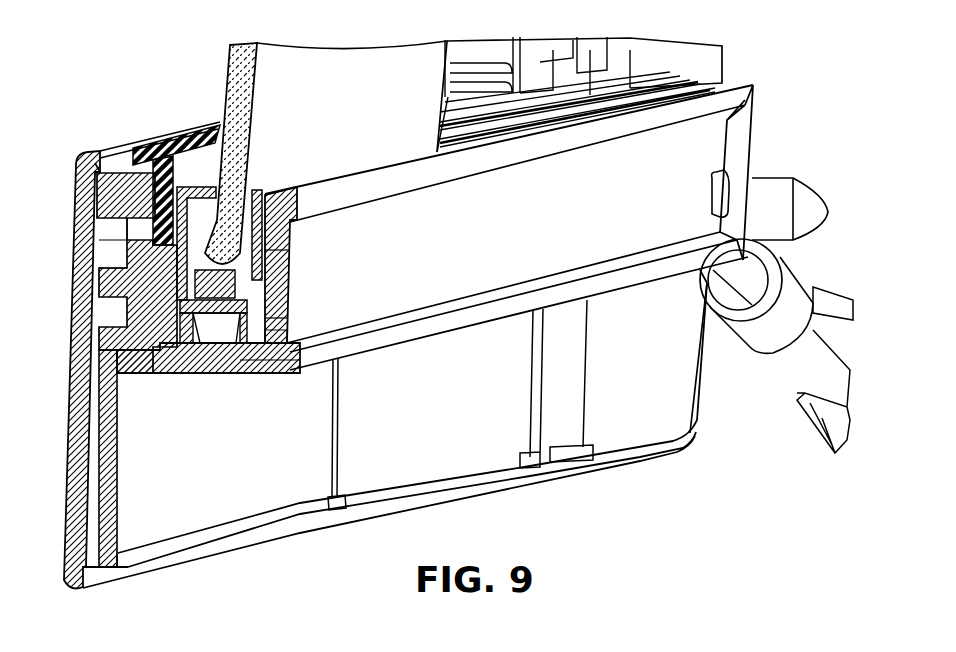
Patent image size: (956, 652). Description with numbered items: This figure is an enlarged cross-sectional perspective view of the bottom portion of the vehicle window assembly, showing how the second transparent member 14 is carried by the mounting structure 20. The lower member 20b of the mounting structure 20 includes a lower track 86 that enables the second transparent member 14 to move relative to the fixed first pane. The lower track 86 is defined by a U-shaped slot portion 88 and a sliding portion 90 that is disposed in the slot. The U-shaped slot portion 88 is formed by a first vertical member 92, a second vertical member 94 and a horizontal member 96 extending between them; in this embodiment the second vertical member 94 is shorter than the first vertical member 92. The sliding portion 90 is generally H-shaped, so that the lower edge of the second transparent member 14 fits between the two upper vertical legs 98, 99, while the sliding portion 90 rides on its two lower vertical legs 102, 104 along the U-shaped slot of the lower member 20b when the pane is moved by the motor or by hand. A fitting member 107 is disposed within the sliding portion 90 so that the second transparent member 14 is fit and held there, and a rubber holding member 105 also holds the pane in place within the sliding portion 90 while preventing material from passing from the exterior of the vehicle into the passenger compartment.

The second transparent member 14 is at (327, 88).
The mounting structure 20 is at (448, 337).
The lower member 20b is at (248, 356).
The lower track 86 is at (277, 290).
The U-shaped slot portion 88 is at (202, 346).
The sliding portion 90 is at (277, 265).
The first vertical member 92 is at (282, 322).
The second vertical member 94 is at (163, 273).
The horizontal member 96 is at (233, 362).
The upper vertical leg 98 is at (272, 239).
The upper vertical leg 99 is at (180, 228).
The lower vertical leg 102 is at (160, 348).
The lower vertical leg 104 is at (268, 336).
The rubber holding member 105 is at (164, 148).
The fitting member 107 is at (283, 197).